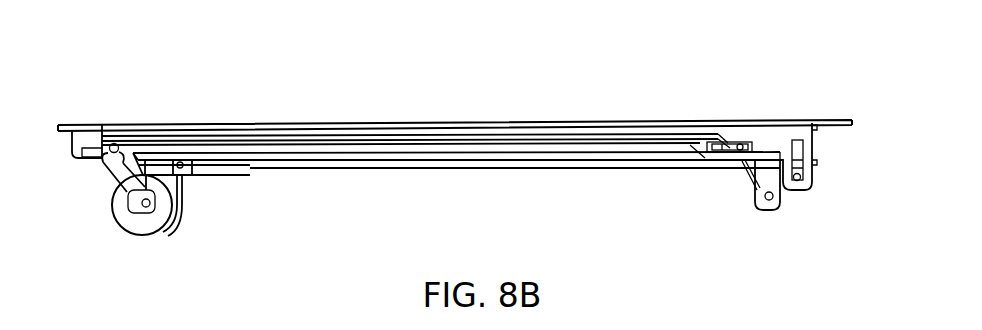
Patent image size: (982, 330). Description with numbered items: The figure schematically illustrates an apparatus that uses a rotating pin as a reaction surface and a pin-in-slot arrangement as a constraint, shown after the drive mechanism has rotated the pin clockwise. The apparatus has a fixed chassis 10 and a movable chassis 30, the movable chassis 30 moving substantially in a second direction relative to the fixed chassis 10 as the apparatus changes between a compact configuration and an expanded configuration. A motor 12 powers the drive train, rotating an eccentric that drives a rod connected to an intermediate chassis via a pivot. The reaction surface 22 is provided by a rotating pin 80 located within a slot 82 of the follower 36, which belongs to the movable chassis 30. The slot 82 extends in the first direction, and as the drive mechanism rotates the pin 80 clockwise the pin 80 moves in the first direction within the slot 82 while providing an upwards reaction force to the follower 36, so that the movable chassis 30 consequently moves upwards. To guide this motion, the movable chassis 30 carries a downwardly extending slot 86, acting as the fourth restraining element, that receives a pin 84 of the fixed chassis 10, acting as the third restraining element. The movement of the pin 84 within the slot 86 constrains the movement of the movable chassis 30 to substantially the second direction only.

The fixed chassis 10 is at (782, 205).
The motor 12 is at (145, 232).
The reaction surface 22 is at (116, 144).
The movable chassis 30 is at (318, 121).
The follower 36 is at (86, 137).
The rotating pin 80 is at (106, 163).
The slot 82 is at (92, 153).
The pin 84 is at (800, 179).
The downwardly extending slot 86 is at (803, 142).